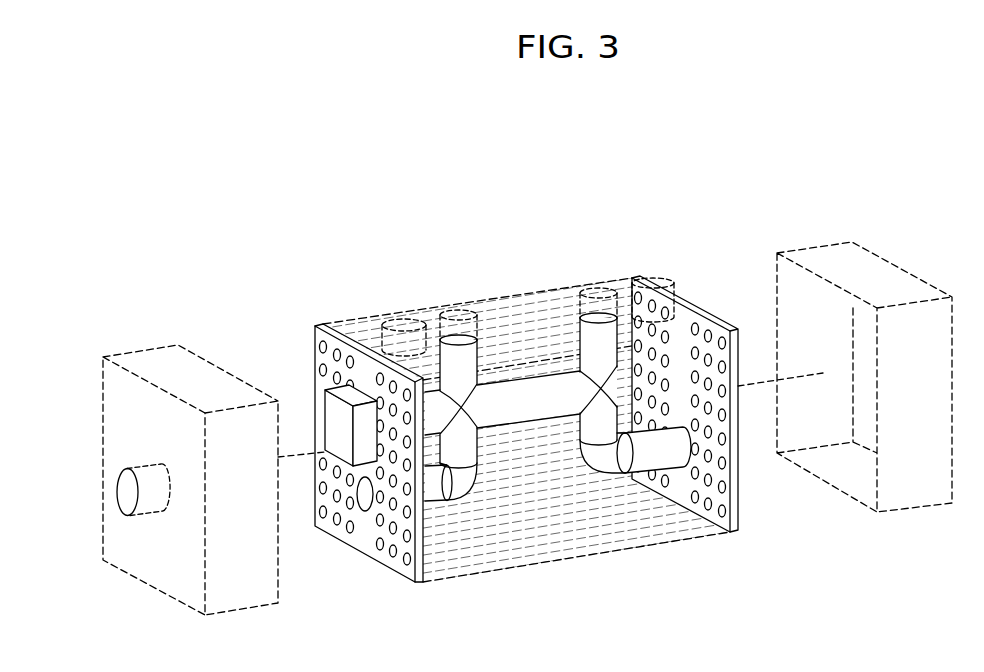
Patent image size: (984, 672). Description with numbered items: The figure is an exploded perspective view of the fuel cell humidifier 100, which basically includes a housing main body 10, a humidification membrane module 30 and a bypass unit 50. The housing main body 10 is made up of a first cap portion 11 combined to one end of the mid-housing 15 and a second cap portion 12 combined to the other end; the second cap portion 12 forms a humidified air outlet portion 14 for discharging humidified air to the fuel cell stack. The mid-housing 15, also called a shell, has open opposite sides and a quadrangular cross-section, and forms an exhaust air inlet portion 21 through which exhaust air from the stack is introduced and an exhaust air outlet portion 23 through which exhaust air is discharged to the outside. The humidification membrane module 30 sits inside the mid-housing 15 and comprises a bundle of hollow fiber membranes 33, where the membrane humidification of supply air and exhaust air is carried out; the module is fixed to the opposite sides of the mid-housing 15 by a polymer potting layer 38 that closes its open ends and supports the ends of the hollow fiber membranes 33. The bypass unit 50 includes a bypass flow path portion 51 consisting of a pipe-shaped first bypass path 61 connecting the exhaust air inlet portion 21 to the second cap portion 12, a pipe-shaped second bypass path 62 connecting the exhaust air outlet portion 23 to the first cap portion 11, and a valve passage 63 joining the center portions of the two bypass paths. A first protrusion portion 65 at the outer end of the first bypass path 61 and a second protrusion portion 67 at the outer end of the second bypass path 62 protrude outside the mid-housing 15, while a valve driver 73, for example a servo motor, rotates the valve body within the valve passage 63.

The humidifier 100 is at (279, 191).
The housing main body 10 is at (343, 475).
The first cap portion 11 is at (913, 506).
The second cap portion 12 is at (162, 508).
The humidified air outlet portion 14 is at (117, 488).
The mid-housing 15 is at (657, 548).
The exhaust air inlet portion 21 is at (407, 317).
The exhaust air outlet portion 23 is at (655, 278).
The humidification membrane module 30 is at (527, 460).
The hollow fiber membranes 33 is at (687, 523).
The potting layer 38 is at (692, 300).
The bypass unit 50 is at (558, 440).
The bypass flow path portion 51 is at (558, 515).
The first bypass path 61 is at (478, 458).
The second bypass path 62 is at (568, 445).
The valve passage 63 is at (530, 421).
The first protrusion portion 65 is at (454, 310).
The second protrusion portion 67 is at (591, 288).
The valve driver 73 is at (328, 408).